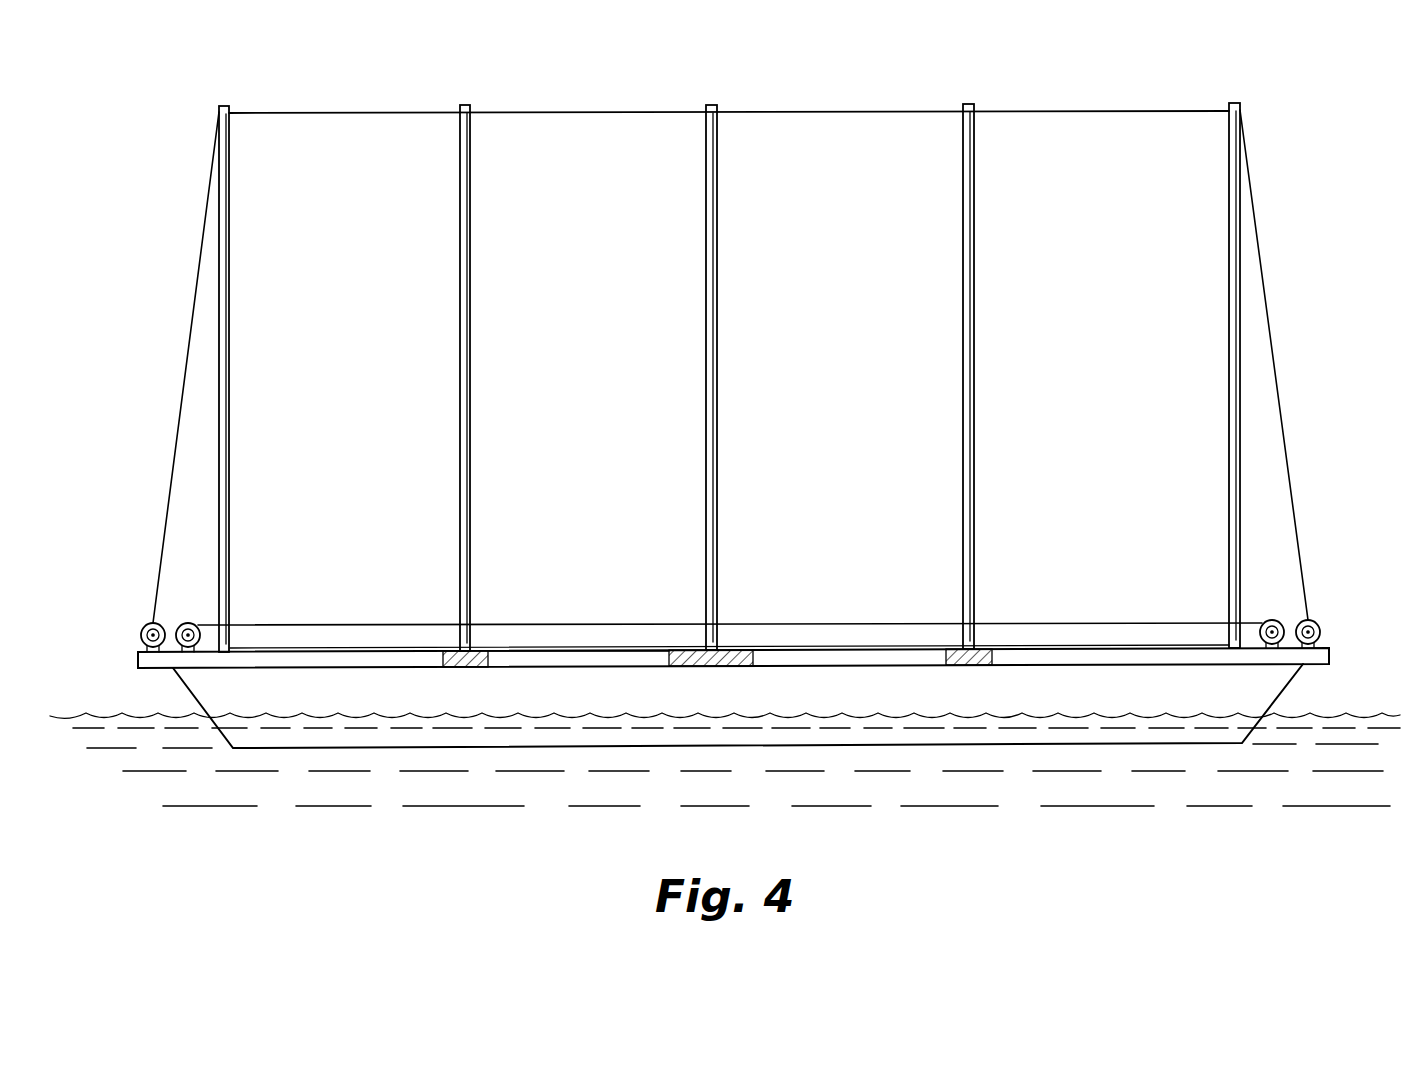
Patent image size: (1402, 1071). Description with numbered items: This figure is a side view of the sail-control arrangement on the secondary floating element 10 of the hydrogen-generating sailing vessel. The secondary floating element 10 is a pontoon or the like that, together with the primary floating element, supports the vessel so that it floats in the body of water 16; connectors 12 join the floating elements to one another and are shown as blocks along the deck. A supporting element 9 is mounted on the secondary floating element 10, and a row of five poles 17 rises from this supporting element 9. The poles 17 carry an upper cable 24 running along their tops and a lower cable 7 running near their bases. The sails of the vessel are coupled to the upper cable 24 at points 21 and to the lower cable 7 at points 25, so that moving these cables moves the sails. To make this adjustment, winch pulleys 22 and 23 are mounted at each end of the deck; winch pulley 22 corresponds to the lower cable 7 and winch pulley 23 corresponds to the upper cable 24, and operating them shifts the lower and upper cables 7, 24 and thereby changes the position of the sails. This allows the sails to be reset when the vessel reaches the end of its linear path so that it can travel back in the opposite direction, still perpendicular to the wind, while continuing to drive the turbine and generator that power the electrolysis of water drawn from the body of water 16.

The lower cable 7 is at (271, 623).
The supporting element 9 is at (544, 660).
The secondary floating element 10 is at (203, 687).
The connector 12 is at (478, 650).
The body of water 16 is at (1366, 720).
The pole 17 is at (223, 104).
The coupling point 21 is at (450, 112).
The winch pulley 22 is at (188, 622).
The winch pulley 23 is at (144, 630).
The upper cable 24 is at (198, 268).
The coupling point 25 is at (448, 623).